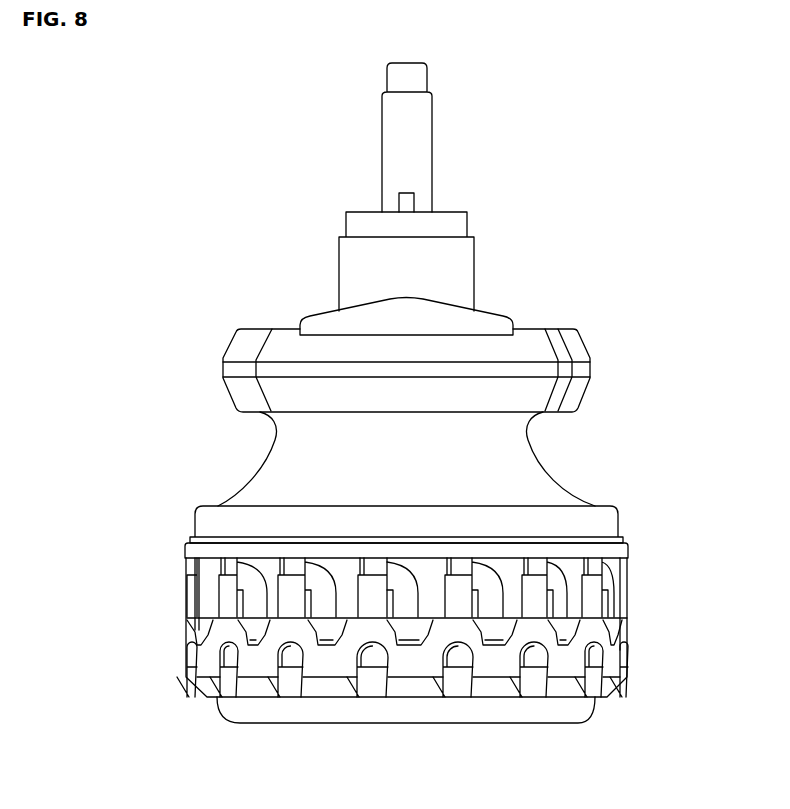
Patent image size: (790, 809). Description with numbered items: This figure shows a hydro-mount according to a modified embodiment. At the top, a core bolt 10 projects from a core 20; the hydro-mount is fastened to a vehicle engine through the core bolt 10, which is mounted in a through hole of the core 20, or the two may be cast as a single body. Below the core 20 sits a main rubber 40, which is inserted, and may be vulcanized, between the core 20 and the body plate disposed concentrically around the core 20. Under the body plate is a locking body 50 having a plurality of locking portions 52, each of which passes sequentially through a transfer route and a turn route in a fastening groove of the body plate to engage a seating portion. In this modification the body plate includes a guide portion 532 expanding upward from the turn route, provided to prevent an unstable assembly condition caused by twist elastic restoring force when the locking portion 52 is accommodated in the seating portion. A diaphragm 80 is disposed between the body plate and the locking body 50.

The core bolt 10 is at (417, 142).
The core 20 is at (456, 223).
The main rubber 40 is at (570, 338).
The locking body 50 is at (613, 663).
The locking portion 52 is at (597, 583).
The guide portion 532 is at (371, 569).
The diaphragm 80 is at (575, 708).